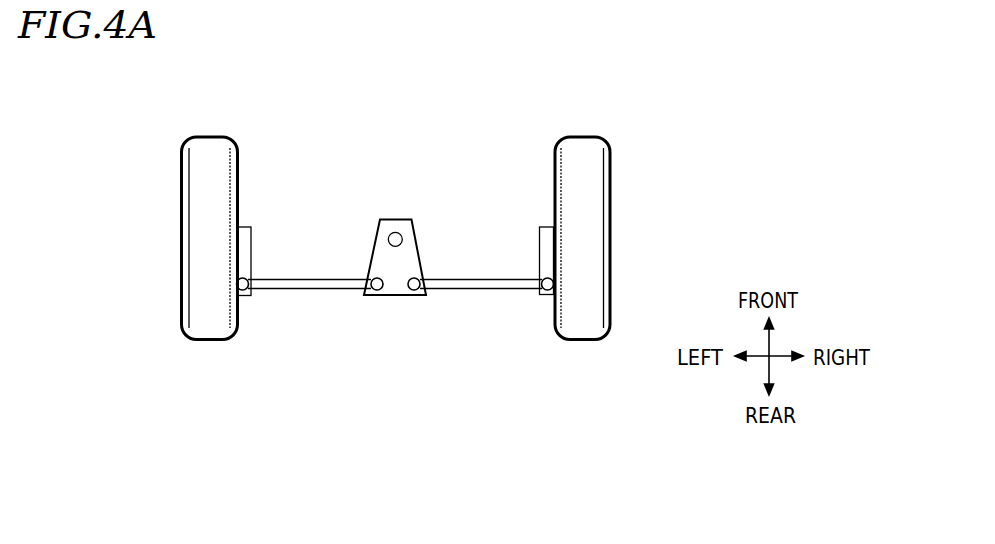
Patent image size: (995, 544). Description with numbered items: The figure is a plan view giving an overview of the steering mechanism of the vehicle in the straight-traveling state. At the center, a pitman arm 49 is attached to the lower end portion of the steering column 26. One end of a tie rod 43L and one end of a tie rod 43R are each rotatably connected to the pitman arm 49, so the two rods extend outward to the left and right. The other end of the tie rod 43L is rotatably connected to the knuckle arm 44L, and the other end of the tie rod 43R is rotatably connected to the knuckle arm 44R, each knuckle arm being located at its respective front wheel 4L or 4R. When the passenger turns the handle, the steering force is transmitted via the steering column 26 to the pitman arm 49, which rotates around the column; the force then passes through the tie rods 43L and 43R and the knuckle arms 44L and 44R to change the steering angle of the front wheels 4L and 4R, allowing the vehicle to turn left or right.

The front wheel 4L is at (185, 143).
The front wheel 4R is at (608, 148).
The knuckle arm 44L is at (247, 227).
The knuckle arm 44R is at (547, 227).
The tie rod 43L is at (308, 289).
The tie rod 43R is at (478, 289).
The steering column 26 is at (398, 233).
The pitman arm 49 is at (400, 290).